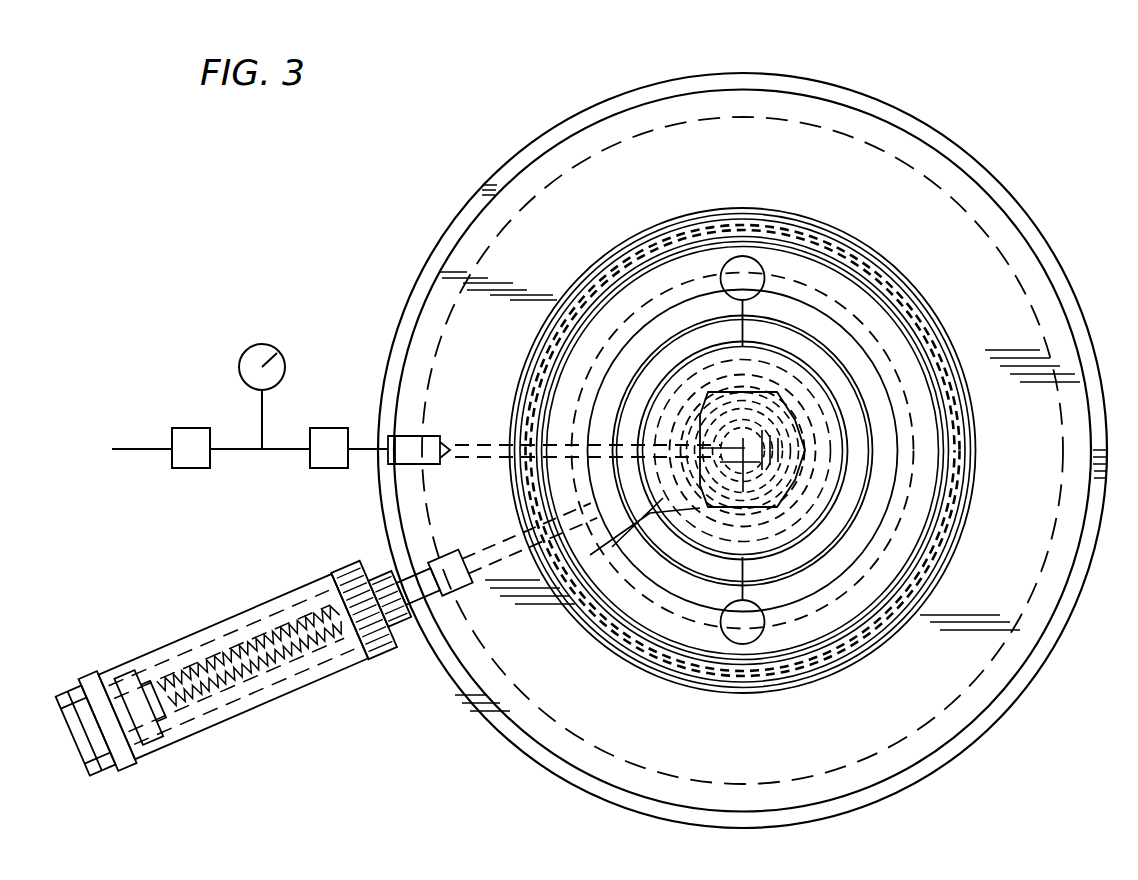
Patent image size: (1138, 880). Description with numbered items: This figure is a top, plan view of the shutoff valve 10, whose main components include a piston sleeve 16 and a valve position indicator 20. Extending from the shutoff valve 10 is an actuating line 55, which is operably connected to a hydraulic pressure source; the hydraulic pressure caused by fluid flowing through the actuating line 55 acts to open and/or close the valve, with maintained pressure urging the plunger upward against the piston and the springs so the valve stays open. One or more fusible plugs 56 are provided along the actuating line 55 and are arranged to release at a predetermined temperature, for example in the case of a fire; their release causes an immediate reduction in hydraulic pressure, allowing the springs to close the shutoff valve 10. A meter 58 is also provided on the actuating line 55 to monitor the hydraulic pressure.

The shutoff valve 10 is at (446, 178).
The piston sleeve 16 is at (1038, 232).
The valve position indicator 20 is at (175, 634).
The actuating line 55 is at (138, 449).
The fusible plugs 56 is at (192, 428).
The meter 58 is at (252, 345).